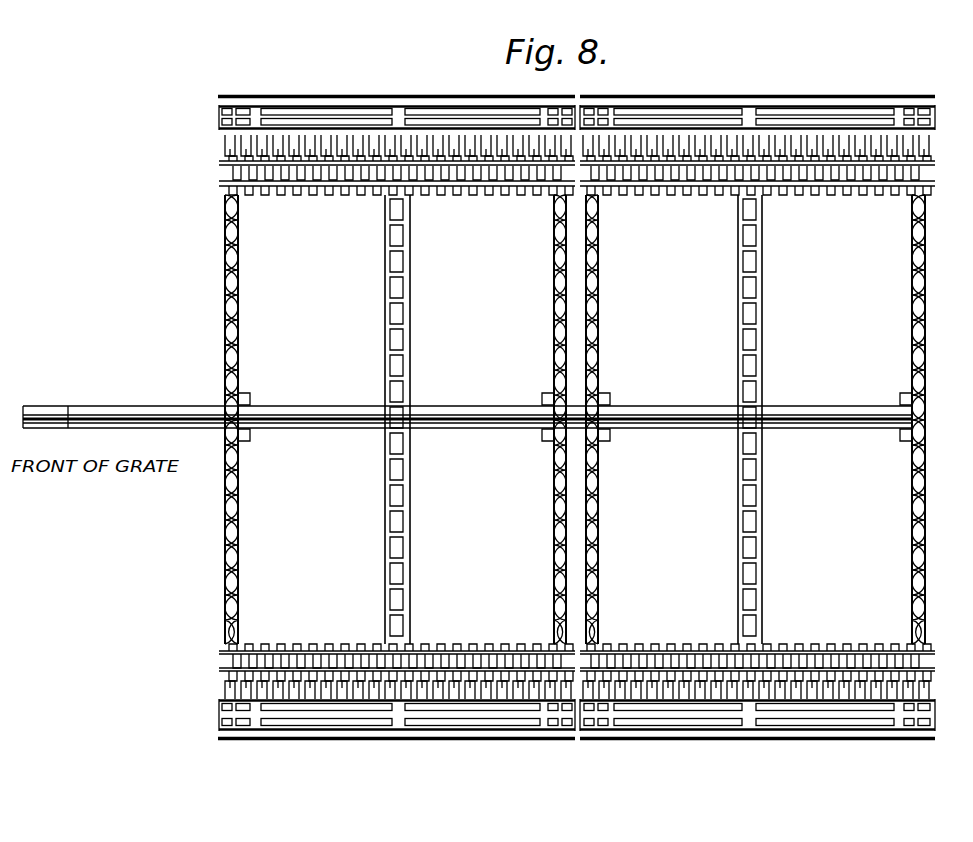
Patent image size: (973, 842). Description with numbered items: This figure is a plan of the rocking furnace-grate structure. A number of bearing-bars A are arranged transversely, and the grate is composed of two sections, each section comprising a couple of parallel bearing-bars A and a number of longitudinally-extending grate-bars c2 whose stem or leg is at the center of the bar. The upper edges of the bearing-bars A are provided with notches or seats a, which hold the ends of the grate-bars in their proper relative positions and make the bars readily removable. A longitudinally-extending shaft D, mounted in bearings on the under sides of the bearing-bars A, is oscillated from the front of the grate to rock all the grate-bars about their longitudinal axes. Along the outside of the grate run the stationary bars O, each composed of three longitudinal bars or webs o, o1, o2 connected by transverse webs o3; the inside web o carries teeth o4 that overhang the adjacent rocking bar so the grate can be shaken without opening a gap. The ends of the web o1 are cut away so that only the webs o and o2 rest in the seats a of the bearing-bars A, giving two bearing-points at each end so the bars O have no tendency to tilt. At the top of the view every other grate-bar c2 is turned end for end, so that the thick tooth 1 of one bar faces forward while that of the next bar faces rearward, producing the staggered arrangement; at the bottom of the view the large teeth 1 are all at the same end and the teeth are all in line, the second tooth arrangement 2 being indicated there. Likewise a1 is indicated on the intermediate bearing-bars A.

The outside stationary bar O is at (408, 106).
The inside longitudinally-extending web o is at (846, 140).
The middle web o1 is at (450, 112).
The outer web o2 is at (336, 104).
The transverse web o3 is at (752, 752).
The teeth of inside web o4 is at (256, 150).
The thick tooth 1 is at (222, 170).
The lower toothed bar 2 is at (222, 186).
The grate-bar c2 is at (682, 654).
The notch or seat a is at (240, 282).
The bearing-bar A is at (239, 300).
The intermediate frame bar a1 is at (411, 270).
The shaft D is at (122, 410).